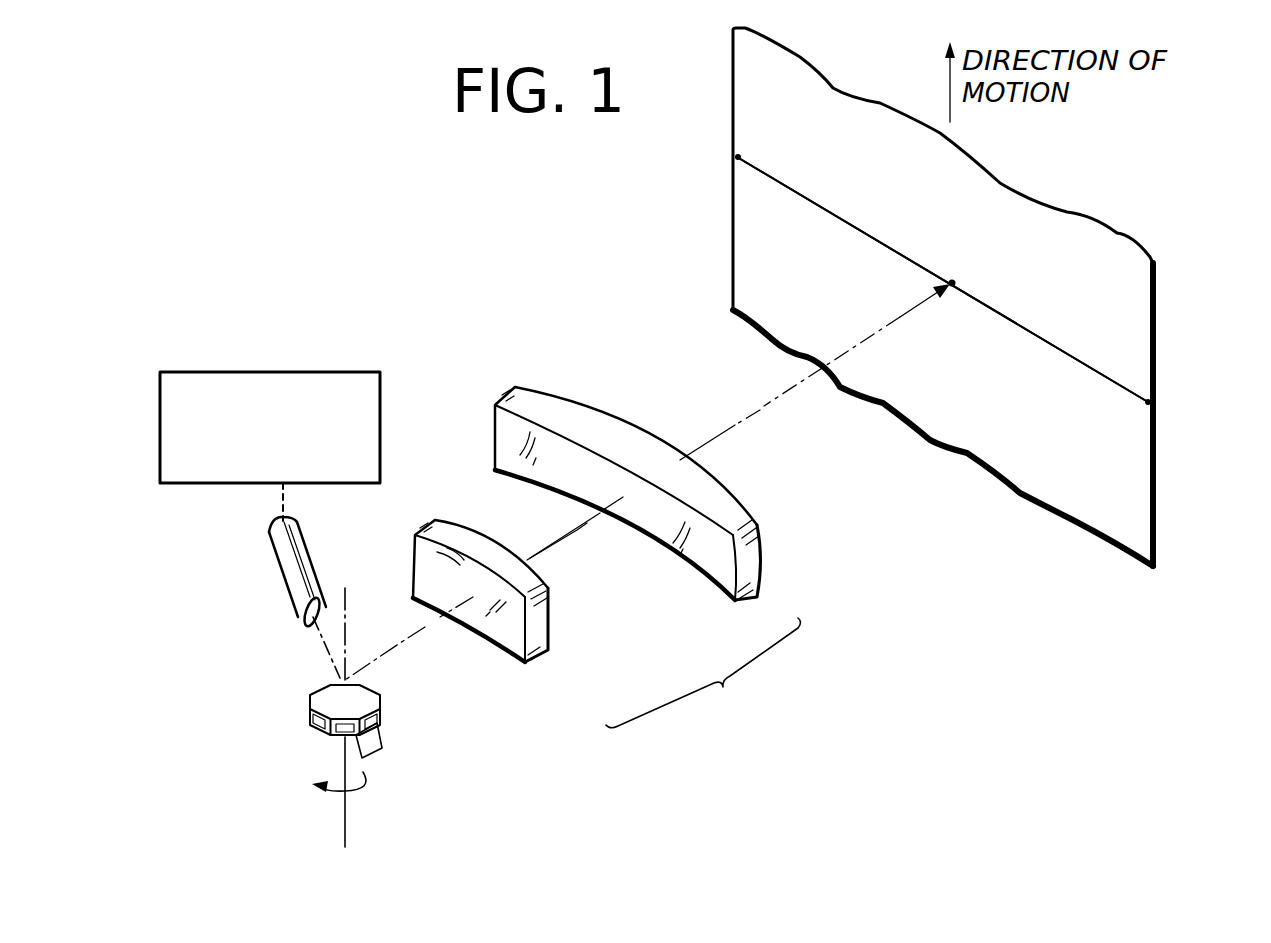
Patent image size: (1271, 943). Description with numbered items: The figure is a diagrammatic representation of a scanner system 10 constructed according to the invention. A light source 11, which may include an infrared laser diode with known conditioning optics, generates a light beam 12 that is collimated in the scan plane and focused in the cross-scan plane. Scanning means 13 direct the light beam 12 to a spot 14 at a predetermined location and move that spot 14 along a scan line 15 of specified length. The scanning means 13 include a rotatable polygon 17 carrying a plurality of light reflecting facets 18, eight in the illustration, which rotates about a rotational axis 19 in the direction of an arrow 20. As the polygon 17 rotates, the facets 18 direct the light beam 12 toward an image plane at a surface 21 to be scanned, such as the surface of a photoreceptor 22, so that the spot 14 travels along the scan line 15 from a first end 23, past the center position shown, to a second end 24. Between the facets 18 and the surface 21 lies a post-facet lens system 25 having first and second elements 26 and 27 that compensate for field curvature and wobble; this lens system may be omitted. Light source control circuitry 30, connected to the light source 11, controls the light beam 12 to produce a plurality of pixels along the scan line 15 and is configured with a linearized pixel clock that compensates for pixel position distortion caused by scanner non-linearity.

The scanner system 10 is at (995, 655).
The light source 11 is at (280, 572).
The light beam 12 is at (737, 427).
The scanning means 13 is at (341, 704).
The spot 14 is at (935, 285).
The scan line 15 is at (815, 211).
The polygon 17 is at (323, 700).
The light reflecting facets 18 is at (375, 740).
The rotational axis 19 is at (342, 815).
The arrow 20 is at (362, 783).
The surface 21 is at (795, 192).
The photoreceptor 22 is at (1156, 305).
The first end 23 is at (735, 157).
The second end 24 is at (1146, 405).
The post-facet lens system 25 is at (703, 673).
The first element 26 is at (557, 627).
The second element 27 is at (763, 560).
The light source control circuitry 30 is at (257, 370).